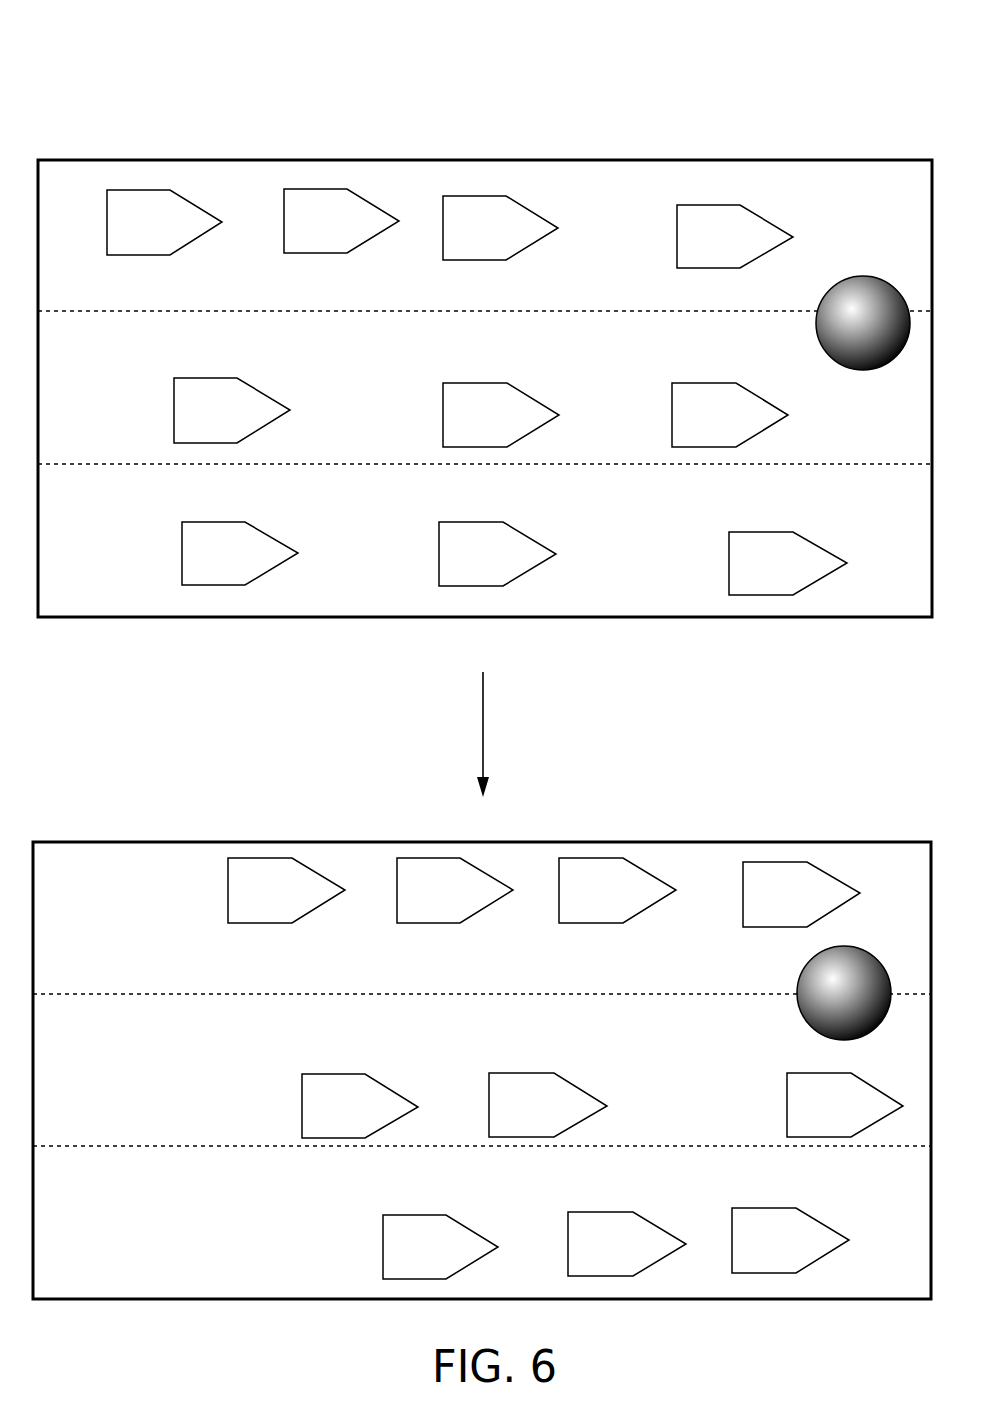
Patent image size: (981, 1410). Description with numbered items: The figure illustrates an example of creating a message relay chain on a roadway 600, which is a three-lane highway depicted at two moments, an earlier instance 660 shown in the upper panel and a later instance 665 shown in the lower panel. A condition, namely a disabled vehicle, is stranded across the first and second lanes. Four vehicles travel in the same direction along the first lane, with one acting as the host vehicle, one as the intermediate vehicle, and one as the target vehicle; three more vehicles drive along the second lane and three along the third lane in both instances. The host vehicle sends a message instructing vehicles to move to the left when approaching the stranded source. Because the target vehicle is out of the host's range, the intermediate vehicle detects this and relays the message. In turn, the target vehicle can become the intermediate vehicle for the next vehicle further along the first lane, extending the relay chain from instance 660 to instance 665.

The roadway 600 is at (70, 74).
The instance 660 is at (918, 189).
The instance 665 is at (880, 873).